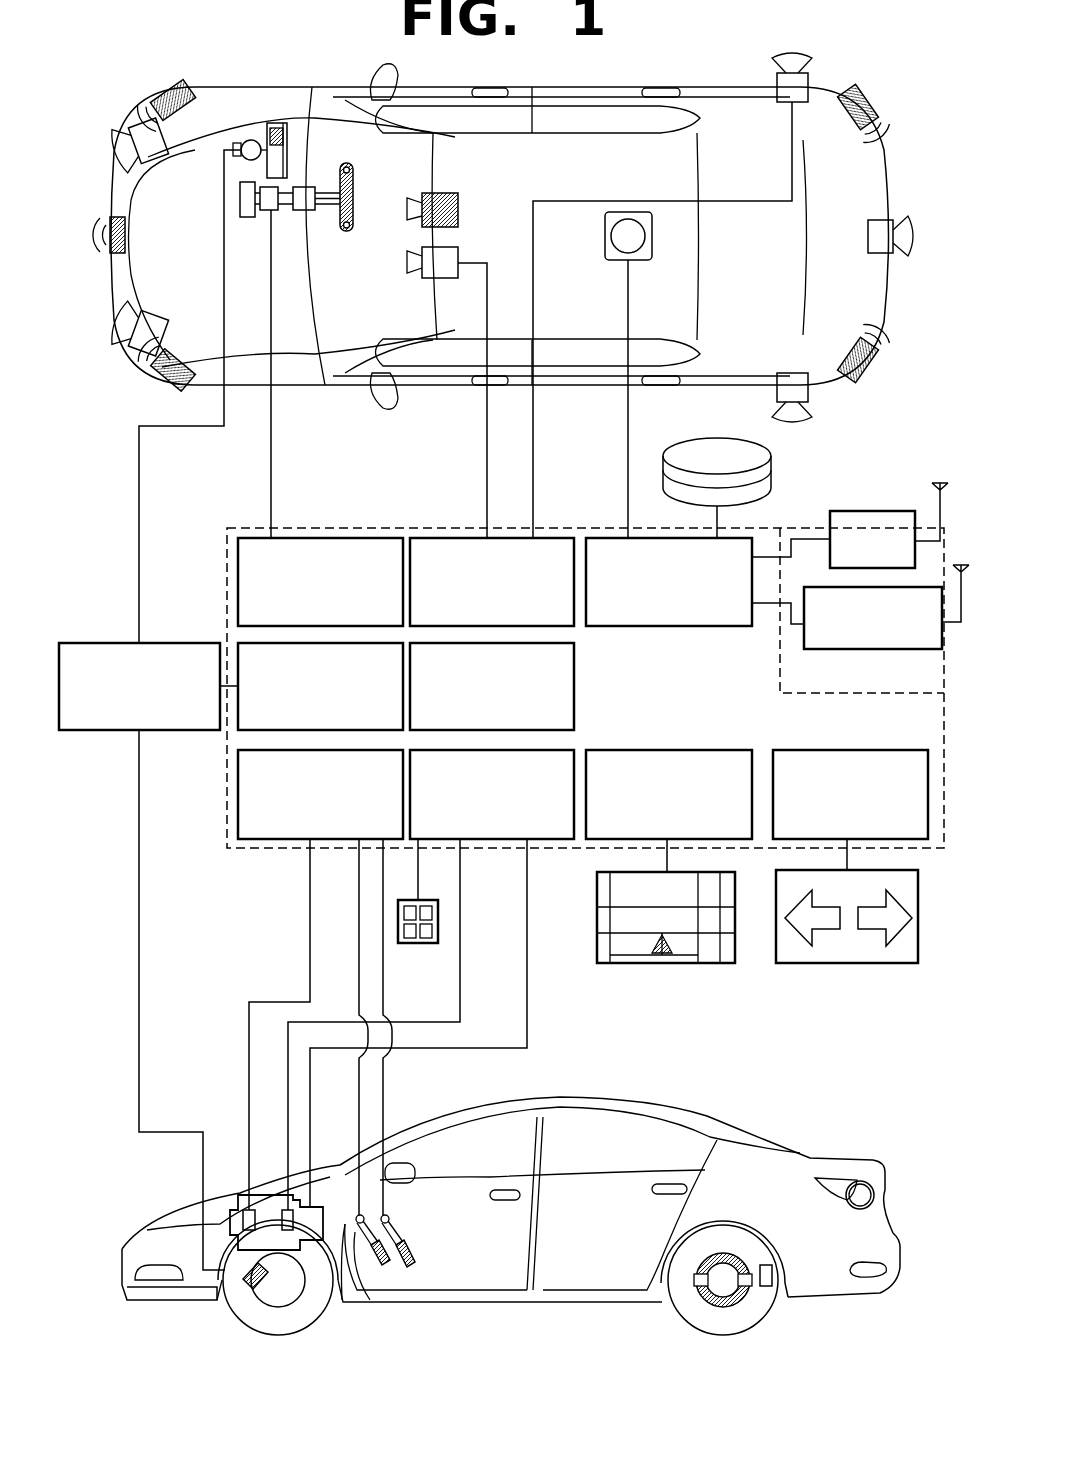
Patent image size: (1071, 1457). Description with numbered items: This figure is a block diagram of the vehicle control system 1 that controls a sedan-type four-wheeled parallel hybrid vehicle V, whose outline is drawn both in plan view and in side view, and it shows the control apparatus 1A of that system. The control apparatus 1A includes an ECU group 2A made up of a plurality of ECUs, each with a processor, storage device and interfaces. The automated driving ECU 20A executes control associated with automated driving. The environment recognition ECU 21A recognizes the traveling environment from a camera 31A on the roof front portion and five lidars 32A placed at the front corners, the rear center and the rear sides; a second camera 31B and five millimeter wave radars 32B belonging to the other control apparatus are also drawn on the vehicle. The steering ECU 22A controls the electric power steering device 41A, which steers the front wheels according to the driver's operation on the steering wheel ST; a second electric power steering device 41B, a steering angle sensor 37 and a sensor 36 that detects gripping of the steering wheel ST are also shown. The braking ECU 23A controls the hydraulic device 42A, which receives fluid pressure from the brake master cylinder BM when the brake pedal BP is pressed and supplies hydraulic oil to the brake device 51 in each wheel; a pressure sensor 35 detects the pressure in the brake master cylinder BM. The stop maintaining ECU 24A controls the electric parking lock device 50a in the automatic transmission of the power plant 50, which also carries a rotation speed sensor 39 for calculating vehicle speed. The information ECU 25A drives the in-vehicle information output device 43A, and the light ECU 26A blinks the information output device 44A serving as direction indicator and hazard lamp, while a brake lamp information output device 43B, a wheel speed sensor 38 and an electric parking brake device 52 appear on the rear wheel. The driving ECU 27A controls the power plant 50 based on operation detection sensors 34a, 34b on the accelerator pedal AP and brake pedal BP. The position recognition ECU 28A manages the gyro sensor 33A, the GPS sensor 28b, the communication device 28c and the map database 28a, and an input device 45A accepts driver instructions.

The vehicle V is at (908, 137).
The vehicle control system 1 is at (905, 388).
The control apparatus 1A is at (893, 480).
The ECU group 2A is at (360, 526).
The automated driving ECU 20A is at (574, 685).
The environment recognition ECU 21A is at (553, 537).
The steering ECU 22A is at (312, 537).
The braking ECU 23A is at (247, 730).
The stop maintaining ECU 24A is at (275, 840).
The information ECU 25A is at (682, 750).
The light ECU 26A is at (854, 750).
The driving ECU 27A is at (498, 845).
The position recognition ECU 28A is at (748, 531).
The database 28a is at (706, 437).
The GPS sensor 28b is at (869, 511).
The communication device 28c is at (891, 650).
The camera 31A is at (435, 280).
The camera 31B is at (458, 200).
The lidar 32A is at (158, 165).
The millimeter wave radar 32B is at (198, 93).
The gyro sensor 33A is at (628, 262).
The operation detection sensor 34a is at (357, 1215).
The operation detection sensor 34b is at (388, 1217).
The pressure sensor 35 is at (276, 122).
The sensor 36 is at (353, 180).
The steering angle sensor 37 is at (252, 219).
The wheel speed sensor 38 is at (768, 1290).
The rotation speed sensor 39 is at (282, 1205).
The electric power steering device 41A is at (272, 212).
The electric power steering device 41B is at (303, 186).
The hydraulic device 42A is at (108, 641).
The information output device 43A is at (693, 963).
The information output device 43B is at (858, 1181).
The information output device 44A is at (857, 963).
The input device 45A is at (418, 943).
The power plant 50 is at (322, 1300).
The electric parking lock device 50a is at (241, 1205).
The brake device 51 is at (248, 1293).
The electric parking brake device 52 is at (710, 1307).
The accelerator pedal AP is at (387, 1264).
The brake pedal BP is at (412, 1267).
The brake master cylinder BM is at (253, 139).
The steering wheel ST is at (347, 165).